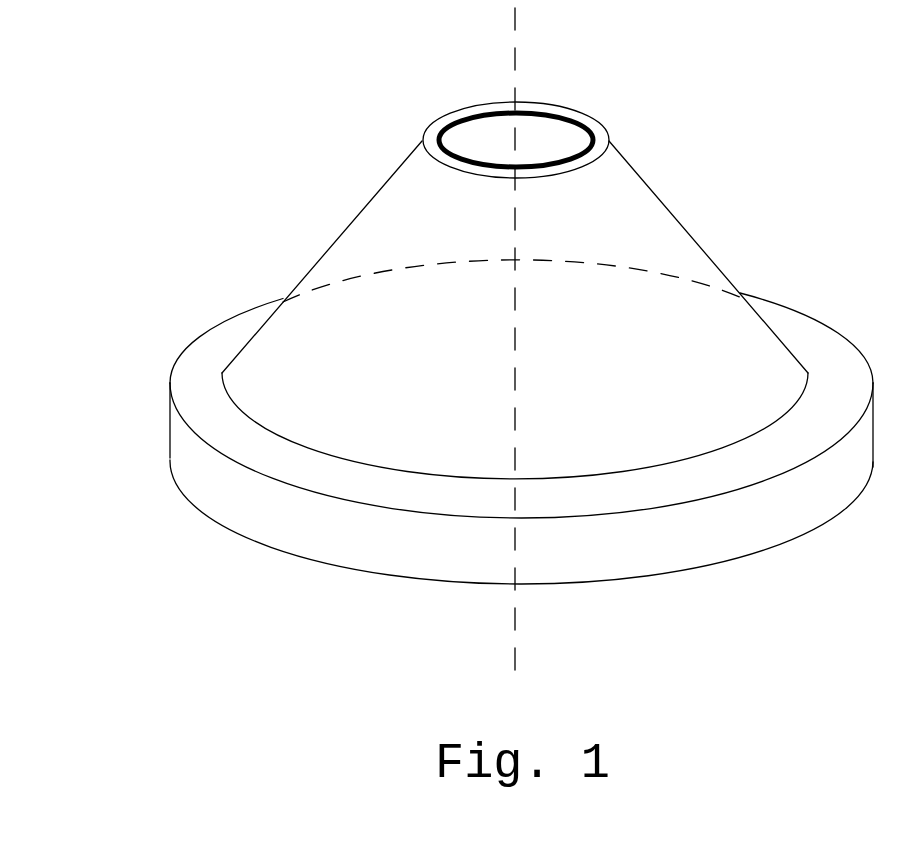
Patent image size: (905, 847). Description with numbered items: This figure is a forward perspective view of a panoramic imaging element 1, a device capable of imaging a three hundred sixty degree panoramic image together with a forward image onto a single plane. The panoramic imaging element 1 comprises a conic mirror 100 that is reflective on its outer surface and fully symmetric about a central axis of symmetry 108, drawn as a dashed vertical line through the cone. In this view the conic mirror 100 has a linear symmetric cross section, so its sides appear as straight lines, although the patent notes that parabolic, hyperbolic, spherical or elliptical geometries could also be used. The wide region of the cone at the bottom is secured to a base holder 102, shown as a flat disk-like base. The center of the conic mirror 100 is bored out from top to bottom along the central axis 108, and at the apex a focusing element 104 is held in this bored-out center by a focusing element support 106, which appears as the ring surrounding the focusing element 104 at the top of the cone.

The panoramic imaging element 1 is at (497, 390).
The conic mirror 100 is at (392, 228).
The base holder 102 is at (195, 457).
The focusing element 104 is at (493, 133).
The focusing element support 106 is at (592, 137).
The central axis of symmetry 108 is at (523, 20).